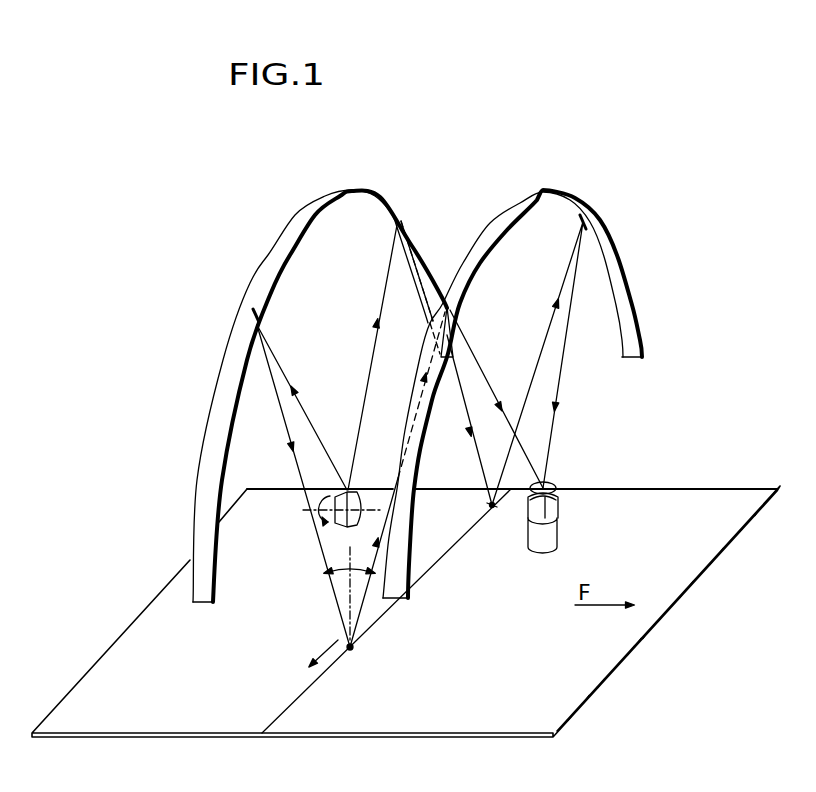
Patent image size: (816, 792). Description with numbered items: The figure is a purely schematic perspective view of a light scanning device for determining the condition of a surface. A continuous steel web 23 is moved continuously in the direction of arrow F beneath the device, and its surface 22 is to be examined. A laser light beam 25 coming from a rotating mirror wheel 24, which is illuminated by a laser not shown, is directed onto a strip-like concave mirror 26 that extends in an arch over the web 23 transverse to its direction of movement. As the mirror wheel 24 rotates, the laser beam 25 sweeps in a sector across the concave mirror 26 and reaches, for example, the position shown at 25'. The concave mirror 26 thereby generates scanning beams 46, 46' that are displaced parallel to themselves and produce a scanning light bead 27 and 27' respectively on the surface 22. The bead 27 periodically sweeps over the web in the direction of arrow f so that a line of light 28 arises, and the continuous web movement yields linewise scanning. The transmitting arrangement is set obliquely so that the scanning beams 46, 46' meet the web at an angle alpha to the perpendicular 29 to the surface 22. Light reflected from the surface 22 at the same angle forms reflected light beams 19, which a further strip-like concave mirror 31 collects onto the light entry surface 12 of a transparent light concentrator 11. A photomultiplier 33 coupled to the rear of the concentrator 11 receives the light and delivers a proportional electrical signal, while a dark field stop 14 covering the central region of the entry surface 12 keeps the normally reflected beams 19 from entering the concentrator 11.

The light concentrator 11 is at (530, 500).
The light entry surface 12 is at (550, 498).
The dark field stop 14 is at (550, 487).
The reflected light beams 19 is at (545, 342).
The surface 22 is at (490, 656).
The steel web 23 is at (608, 685).
The mirror wheel 24 is at (347, 523).
The laser light beam 25 is at (300, 399).
The laser light beam position 25' is at (363, 357).
The strip-like concave mirror 26 is at (268, 256).
The scanning light bead 27 is at (385, 647).
The scanning light bead 27' is at (464, 513).
The line of light 28 is at (313, 683).
The perpendicular 29 is at (340, 598).
The strip-like mirror 31 is at (497, 208).
The photomultiplier 33 is at (548, 532).
The scanning beam 46 is at (297, 486).
The scanning beam 46' is at (472, 348).